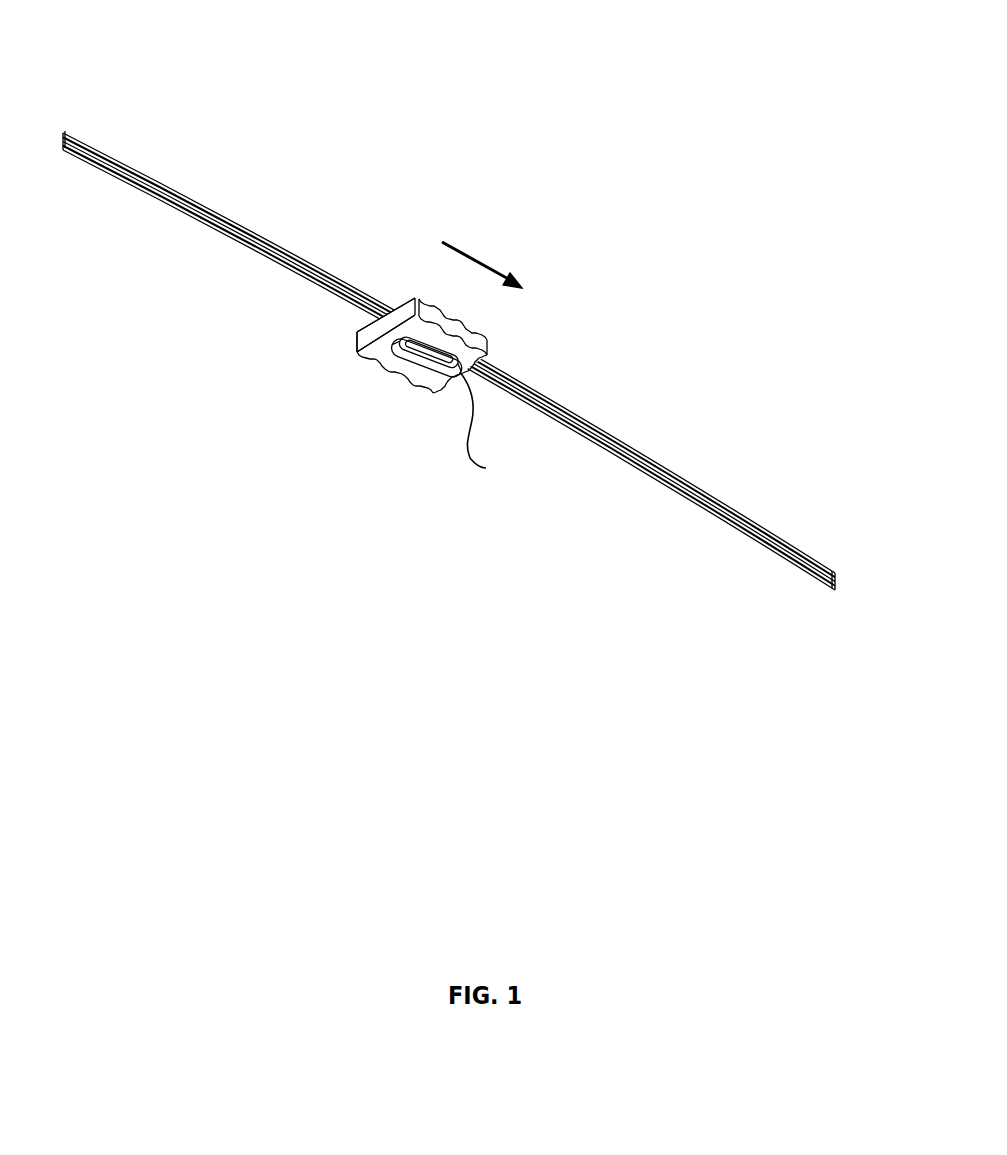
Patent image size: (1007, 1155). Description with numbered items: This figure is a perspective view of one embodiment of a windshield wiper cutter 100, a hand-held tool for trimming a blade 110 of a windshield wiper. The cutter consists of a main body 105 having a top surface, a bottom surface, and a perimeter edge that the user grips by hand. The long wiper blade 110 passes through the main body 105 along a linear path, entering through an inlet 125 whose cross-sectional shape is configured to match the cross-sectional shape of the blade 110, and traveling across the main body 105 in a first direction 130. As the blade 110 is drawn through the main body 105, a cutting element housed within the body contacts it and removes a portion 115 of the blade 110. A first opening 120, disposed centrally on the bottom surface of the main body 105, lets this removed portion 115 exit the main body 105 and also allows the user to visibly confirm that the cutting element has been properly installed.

The windshield wiper cutter 100 is at (560, 55).
The main body 105 is at (493, 337).
The blade 110 is at (620, 424).
The portion 115 is at (492, 491).
The first opening 120 is at (411, 356).
The inlet 125 is at (372, 330).
The first direction 130 is at (482, 255).